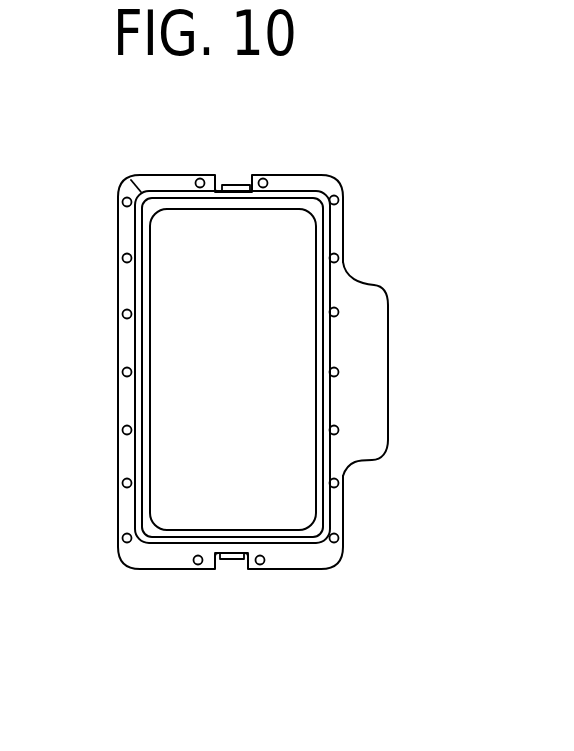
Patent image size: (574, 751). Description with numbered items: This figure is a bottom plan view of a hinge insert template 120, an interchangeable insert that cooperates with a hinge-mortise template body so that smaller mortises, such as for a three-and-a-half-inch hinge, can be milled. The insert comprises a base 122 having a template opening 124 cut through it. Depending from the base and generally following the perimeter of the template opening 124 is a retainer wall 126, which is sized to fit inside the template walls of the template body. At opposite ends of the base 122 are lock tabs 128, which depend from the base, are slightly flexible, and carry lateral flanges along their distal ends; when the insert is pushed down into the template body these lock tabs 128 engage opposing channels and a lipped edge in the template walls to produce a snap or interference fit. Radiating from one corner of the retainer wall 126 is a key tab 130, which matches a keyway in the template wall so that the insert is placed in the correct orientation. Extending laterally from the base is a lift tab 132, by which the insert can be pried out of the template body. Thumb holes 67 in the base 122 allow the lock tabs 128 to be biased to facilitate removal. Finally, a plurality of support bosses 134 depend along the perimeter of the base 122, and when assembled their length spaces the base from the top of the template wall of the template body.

The hinge insert template 120 is at (478, 610).
The base 122 is at (175, 560).
The template opening 124 is at (258, 372).
The retainer wall 126 is at (328, 240).
The lock tabs 128 is at (225, 180).
The key tab 130 is at (135, 183).
The lift tab 132 is at (375, 387).
The support bosses 134 is at (339, 369).
The thumb holes 67 is at (242, 178).